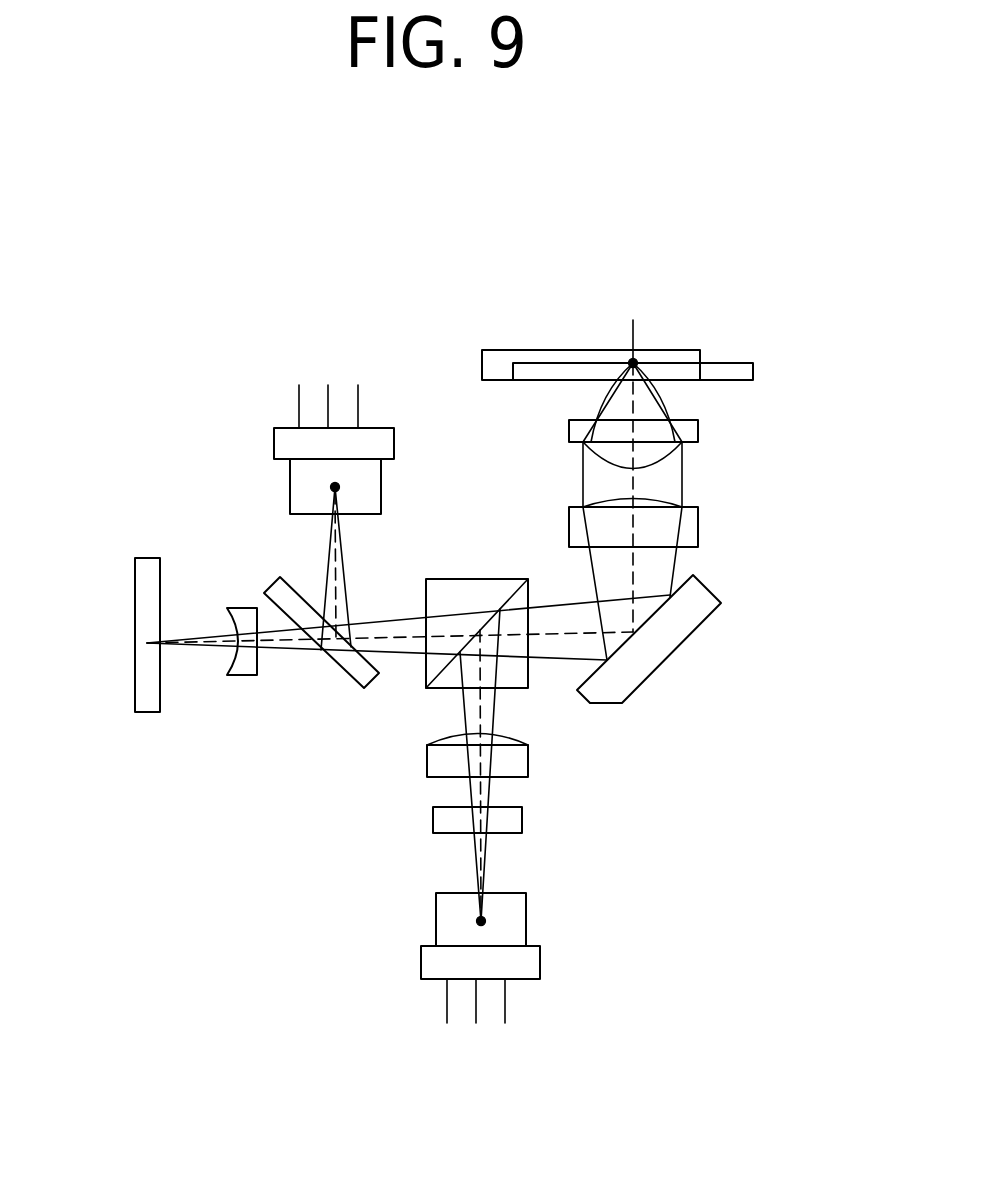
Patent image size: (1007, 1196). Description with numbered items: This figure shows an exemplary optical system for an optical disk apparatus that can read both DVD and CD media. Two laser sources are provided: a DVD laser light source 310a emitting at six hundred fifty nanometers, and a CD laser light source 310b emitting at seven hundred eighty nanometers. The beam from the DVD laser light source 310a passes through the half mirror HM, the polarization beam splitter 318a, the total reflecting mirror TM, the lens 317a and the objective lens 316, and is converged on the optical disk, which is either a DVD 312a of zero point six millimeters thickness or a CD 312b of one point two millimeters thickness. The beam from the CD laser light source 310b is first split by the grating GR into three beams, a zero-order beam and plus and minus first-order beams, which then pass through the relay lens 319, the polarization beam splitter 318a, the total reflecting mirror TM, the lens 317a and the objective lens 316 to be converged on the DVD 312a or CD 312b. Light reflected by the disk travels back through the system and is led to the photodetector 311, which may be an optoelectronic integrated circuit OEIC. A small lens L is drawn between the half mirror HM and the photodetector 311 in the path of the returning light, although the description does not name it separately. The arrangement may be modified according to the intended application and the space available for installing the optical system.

The CD 312b is at (530, 357).
The DVD 312a is at (735, 368).
The DVD laser light source 310a is at (297, 452).
The objective lens 316 is at (695, 427).
The lens 317a is at (687, 528).
The optoelectronic integrated circuit OEIC is at (147, 573).
The photodetector 311 is at (113, 590).
The polarization beam splitter 318a is at (468, 595).
The total reflecting mirror TM is at (657, 647).
The concave lens L is at (243, 665).
The half mirror HM is at (347, 663).
The relay lens 319 is at (443, 762).
The grating GR is at (508, 822).
The CD laser light source 310b is at (510, 923).